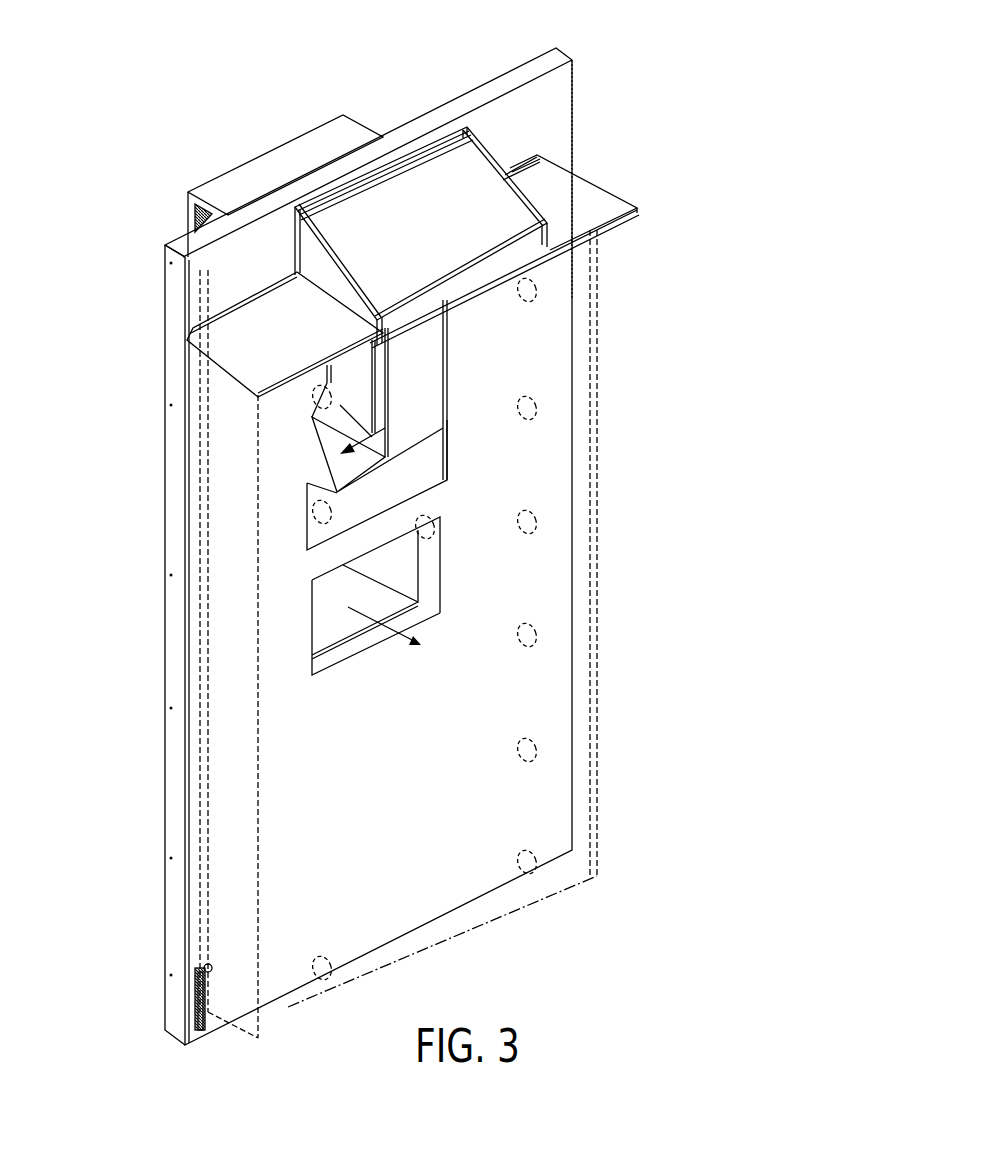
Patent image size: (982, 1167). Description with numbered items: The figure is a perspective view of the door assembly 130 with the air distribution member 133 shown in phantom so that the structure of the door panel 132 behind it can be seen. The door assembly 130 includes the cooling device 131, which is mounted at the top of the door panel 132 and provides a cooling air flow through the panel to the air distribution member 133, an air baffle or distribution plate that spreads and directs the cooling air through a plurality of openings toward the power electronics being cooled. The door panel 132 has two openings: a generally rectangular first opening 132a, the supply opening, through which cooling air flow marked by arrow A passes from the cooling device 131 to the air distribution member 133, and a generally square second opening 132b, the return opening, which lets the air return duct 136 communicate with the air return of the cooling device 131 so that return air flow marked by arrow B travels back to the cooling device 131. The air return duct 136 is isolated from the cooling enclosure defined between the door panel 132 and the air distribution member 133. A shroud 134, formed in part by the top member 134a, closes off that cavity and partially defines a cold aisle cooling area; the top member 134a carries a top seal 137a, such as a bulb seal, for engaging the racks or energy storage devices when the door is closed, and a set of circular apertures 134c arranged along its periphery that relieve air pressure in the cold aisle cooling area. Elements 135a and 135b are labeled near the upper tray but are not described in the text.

The door assembly 130 is at (624, 64).
The cooling device 131 is at (346, 133).
The door panel 132 is at (546, 103).
The first opening 132a is at (330, 622).
The second opening 132b is at (356, 509).
The air distribution member 133 is at (290, 1007).
The shroud 134 is at (617, 177).
The top member 134a is at (580, 207).
The apertures 134c is at (312, 318).
The tray leg 135a is at (312, 260).
The tray 135b is at (388, 213).
The air return duct 136 is at (418, 410).
The top seal 137a is at (548, 252).